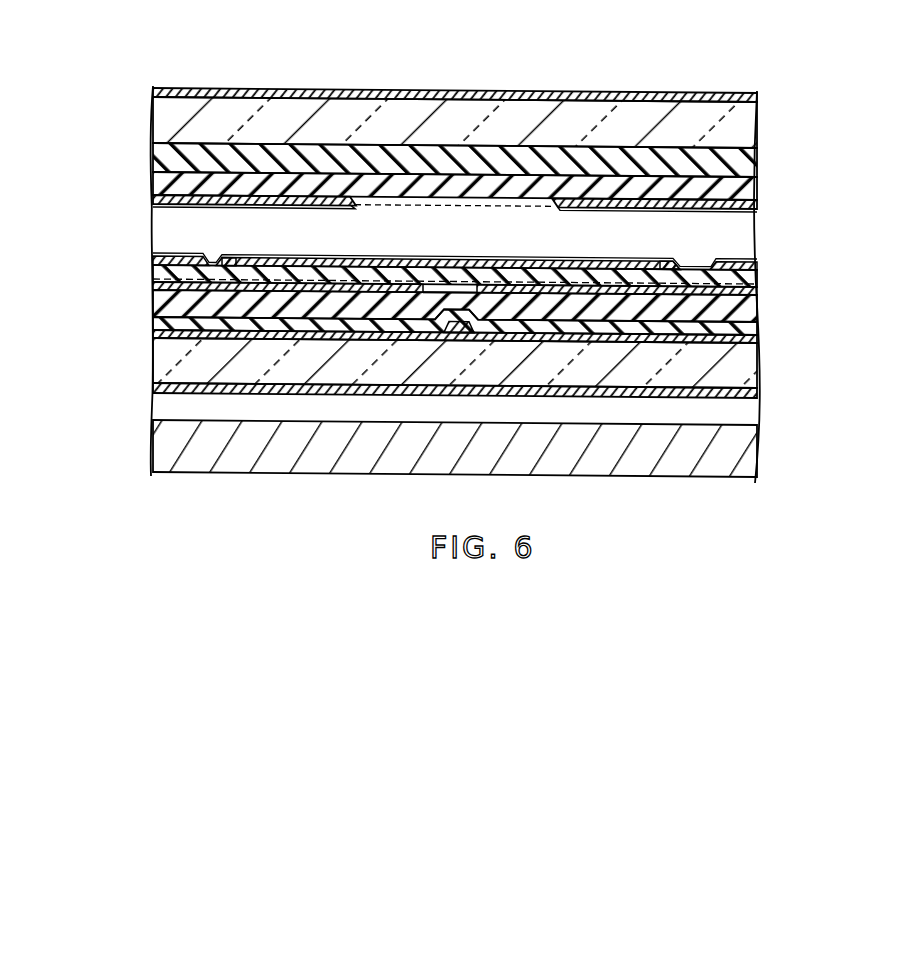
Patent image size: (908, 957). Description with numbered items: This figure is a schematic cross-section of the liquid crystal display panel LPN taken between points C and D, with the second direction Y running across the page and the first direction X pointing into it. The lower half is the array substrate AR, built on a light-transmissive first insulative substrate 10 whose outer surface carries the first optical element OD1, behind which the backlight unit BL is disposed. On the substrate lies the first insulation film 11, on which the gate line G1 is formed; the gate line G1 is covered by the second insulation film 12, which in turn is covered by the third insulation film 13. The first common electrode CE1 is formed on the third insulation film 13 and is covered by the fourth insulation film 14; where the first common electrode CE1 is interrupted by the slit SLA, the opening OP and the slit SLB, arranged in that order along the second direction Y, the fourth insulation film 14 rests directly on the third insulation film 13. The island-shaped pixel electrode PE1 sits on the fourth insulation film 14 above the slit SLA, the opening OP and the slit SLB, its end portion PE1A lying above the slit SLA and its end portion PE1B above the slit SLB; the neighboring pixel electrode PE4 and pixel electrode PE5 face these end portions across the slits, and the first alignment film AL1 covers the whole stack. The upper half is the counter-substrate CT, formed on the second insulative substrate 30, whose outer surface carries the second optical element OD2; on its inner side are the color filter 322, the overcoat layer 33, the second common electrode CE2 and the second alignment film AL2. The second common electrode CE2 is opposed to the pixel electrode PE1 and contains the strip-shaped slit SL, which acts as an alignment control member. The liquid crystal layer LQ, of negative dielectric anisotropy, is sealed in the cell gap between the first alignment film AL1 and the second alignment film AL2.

The second optical element OD2 is at (737, 93).
The liquid crystal display panel LPN is at (768, 101).
The second insulative substrate 30 is at (758, 121).
The color filter 322 is at (758, 166).
The overcoat layer 33 is at (758, 188).
The second common electrode CE2 is at (155, 203).
The second alignment film AL2 is at (758, 213).
The slit SL is at (467, 208).
The slit SLA is at (213, 262).
The slit SLB is at (718, 262).
The liquid crystal layer LQ is at (758, 248).
The counter-substrate CT is at (147, 122).
The array substrate AR is at (147, 360).
The first alignment film AL1 is at (758, 268).
The pixel electrode PE4 is at (155, 263).
The end portion of pixel electrode PE1A is at (242, 256).
The pixel electrode PE1 is at (590, 269).
The end portion of pixel electrode PE1B is at (678, 261).
The pixel electrode PE5 is at (733, 273).
The fourth insulation film 14 is at (758, 286).
The first common electrode CE1 is at (155, 288).
The opening OP is at (438, 282).
The third insulation film 13 is at (758, 312).
The second insulation film 12 is at (758, 329).
The gate line G1 is at (455, 332).
The first insulation film 11 is at (758, 343).
The first insulative substrate 10 is at (758, 375).
The first optical element OD1 is at (758, 394).
The line C-D end point C is at (151, 411).
The line C-D end point D is at (758, 412).
The backlight unit BL is at (153, 447).
The second direction Y is at (858, 458).
The first direction X is at (849, 454).